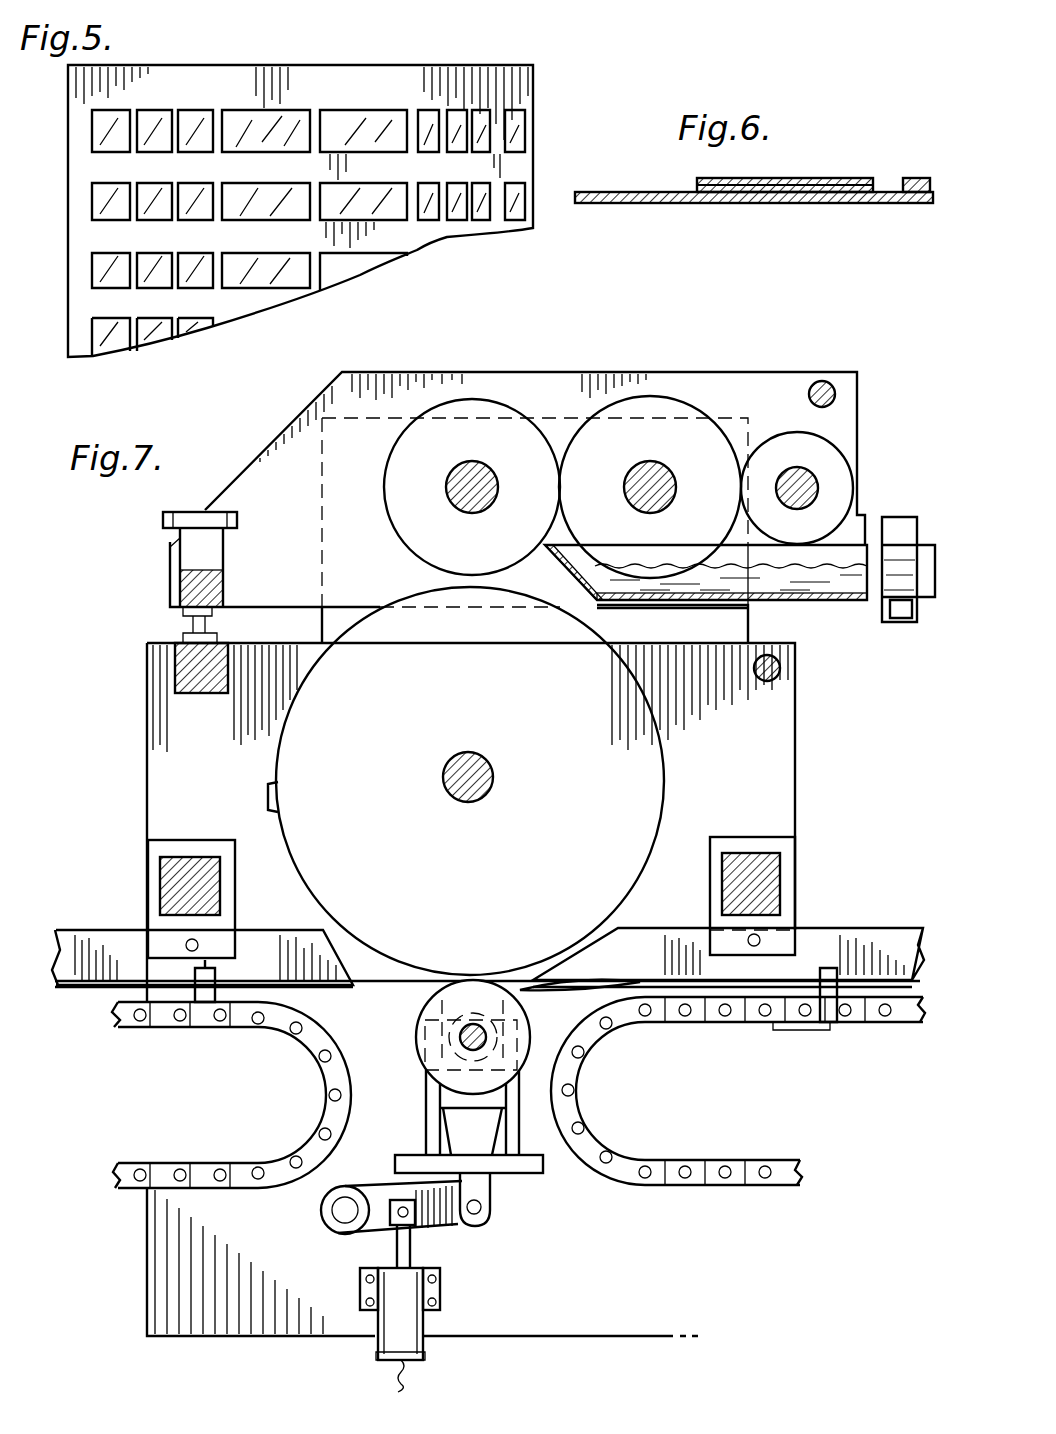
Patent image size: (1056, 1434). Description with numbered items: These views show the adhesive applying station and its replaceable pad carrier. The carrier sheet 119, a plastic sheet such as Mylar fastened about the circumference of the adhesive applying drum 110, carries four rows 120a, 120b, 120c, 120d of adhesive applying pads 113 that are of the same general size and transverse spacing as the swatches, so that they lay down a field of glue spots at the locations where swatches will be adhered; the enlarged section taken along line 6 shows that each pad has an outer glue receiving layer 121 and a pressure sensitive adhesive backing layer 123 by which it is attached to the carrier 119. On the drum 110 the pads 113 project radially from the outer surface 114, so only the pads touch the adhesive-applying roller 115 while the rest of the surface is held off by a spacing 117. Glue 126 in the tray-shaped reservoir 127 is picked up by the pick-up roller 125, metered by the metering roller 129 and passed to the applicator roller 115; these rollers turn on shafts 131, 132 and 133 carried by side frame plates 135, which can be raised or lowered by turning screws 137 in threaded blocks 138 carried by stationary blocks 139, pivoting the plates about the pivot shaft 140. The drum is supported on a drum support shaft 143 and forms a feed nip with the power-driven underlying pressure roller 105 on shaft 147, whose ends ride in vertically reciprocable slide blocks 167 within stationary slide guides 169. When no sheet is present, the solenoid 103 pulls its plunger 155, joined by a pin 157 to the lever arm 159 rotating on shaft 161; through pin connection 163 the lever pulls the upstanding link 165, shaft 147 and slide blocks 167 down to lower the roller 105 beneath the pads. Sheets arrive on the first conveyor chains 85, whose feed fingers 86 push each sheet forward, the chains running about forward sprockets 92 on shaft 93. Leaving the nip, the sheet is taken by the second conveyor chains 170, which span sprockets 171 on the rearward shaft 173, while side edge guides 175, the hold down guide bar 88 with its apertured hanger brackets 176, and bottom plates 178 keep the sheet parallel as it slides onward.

In FIG. 5, the section line 6— 6 is at (160, 134).
In FIG. 5, the adhesive applying pads 113 is at (232, 120).
In FIG. 7, the adhesive applying pads 113 is at (343, 799).
In FIG. 5, the pad carrier sheet 119 is at (363, 98).
In FIG. 6, the pad carrier sheet 119 is at (612, 205).
In FIG. 5, the first row of pads 120a is at (89, 156).
In FIG. 5, the second row of pads 120b is at (90, 218).
In FIG. 5, the third row of pads 120c is at (90, 274).
In FIG. 5, the fourth row of pads 120d is at (94, 357).
In FIG. 6, the glue receiving layer 121 is at (705, 178).
In FIG. 6, the pressure sensitive adhesive backing layer 123 is at (700, 185).
In FIG. 7, the side frame plates 135 is at (516, 395).
In FIG. 7, the pivot shaft 140 is at (822, 381).
In FIG. 7, the metering roller shaft 133 is at (795, 470).
In FIG. 7, the metering roller 129 is at (830, 450).
In FIG. 7, the applicator roller shaft 131 is at (525, 464).
In FIG. 7, the adhesive pick-up roller 125 is at (620, 466).
In FIG. 7, the pickup roller shaft 132 is at (672, 486).
In FIG. 7, the adhesive or glue 126 is at (690, 572).
In FIG. 7, the adhesive-applying roller 115 is at (388, 535).
In FIG. 7, the spacing 117 is at (412, 573).
In FIG. 7, the glue tank or reservoir 127 is at (550, 612).
In FIG. 7, the screws 137 is at (190, 626).
In FIG. 7, the threaded blocks 138 is at (190, 668).
In FIG. 7, the stationary blocks 139 is at (165, 770).
In FIG. 7, the outer surface of drum 114 is at (282, 745).
In FIG. 7, the adhesive applying drum 110 is at (522, 712).
In FIG. 7, the drum support shaft 143 is at (493, 776).
In FIG. 7, the apertured hanger brackets 176 is at (752, 855).
In FIG. 7, the hold down guide bar 88 is at (282, 930).
In FIG. 7, the feed fingers 86 is at (215, 985).
In FIG. 7, the bottom plates 178 is at (630, 985).
In FIG. 7, the side edge guides 175 is at (878, 940).
In FIG. 7, the stationary slide guides 169 is at (822, 965).
In FIG. 7, the chains of second conveyor 170 is at (880, 1025).
In FIG. 7, the underlying pressure roller 105 is at (416, 1010).
In FIG. 7, the pressure roller shaft 147 is at (462, 1040).
In FIG. 7, the slide blocks 167 is at (445, 1115).
In FIG. 7, the lever arm 159 is at (355, 1186).
In FIG. 7, the lever shaft 161 is at (325, 1212).
In FIG. 7, the pin 157 is at (392, 1212).
In FIG. 7, the solenoid plunger 155 is at (410, 1253).
In FIG. 7, the upstanding link 165 is at (478, 1182).
In FIG. 7, the pin connection 163 is at (548, 1230).
In FIG. 7, the solenoid 103 is at (420, 1325).
In FIG. 7, the forward sprockets 92 is at (178, 1095).
In FIG. 7, the forward sprocket shaft 93 is at (240, 1103).
In FIG. 7, the chains of first conveyor 85 is at (125, 1022).
In FIG. 7, the rearward shaft of second conveyor 173 is at (655, 1092).
In FIG. 7, the sprockets of second conveyor 171 is at (790, 1102).